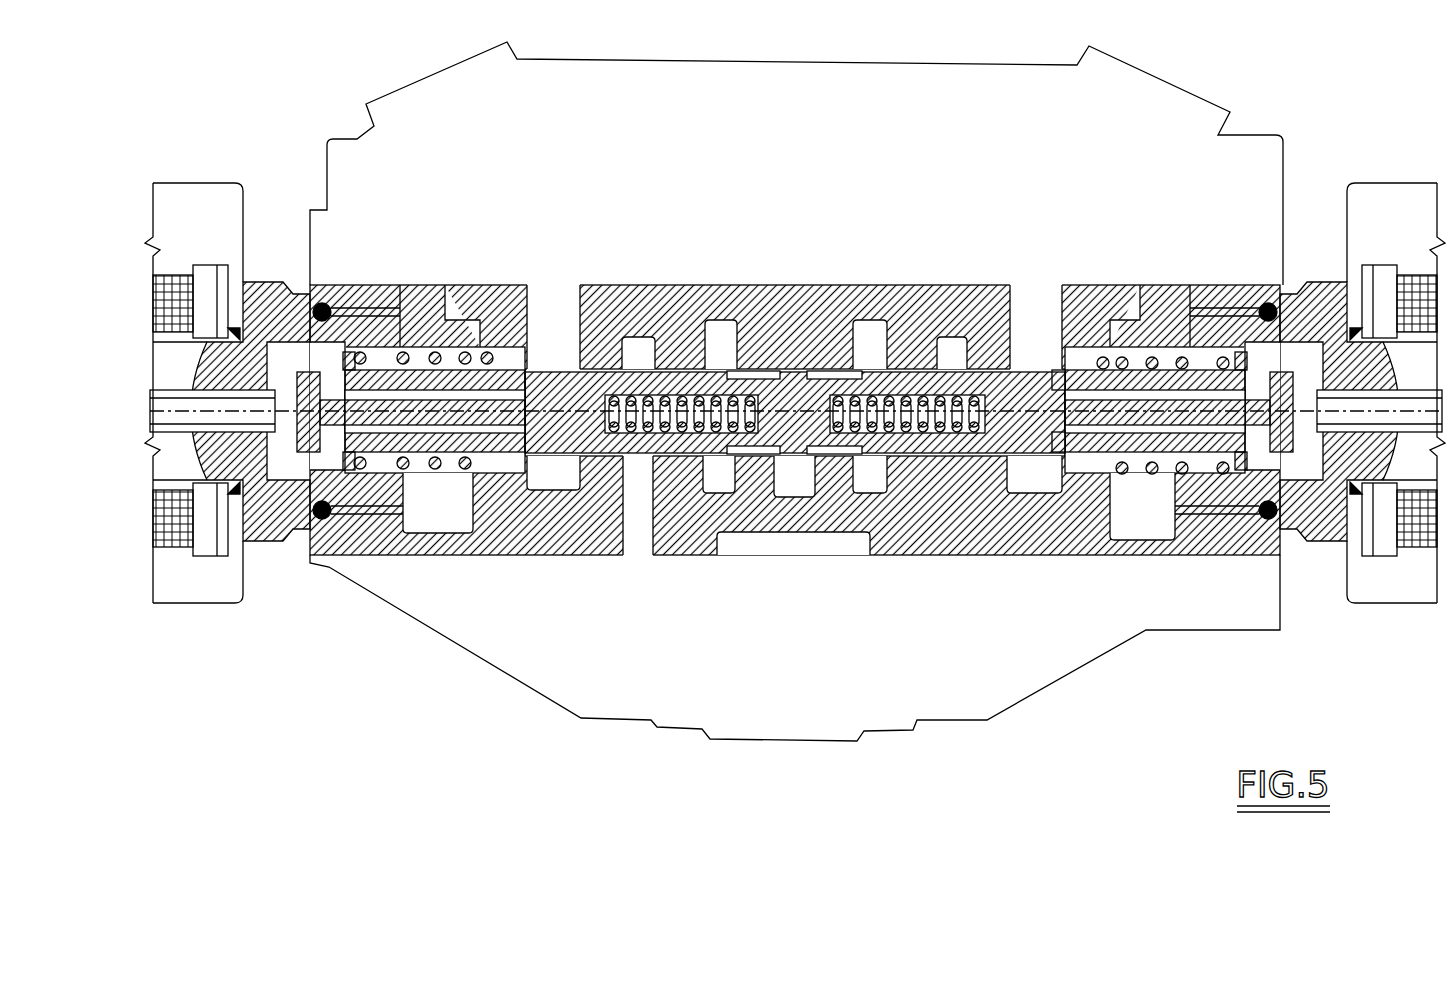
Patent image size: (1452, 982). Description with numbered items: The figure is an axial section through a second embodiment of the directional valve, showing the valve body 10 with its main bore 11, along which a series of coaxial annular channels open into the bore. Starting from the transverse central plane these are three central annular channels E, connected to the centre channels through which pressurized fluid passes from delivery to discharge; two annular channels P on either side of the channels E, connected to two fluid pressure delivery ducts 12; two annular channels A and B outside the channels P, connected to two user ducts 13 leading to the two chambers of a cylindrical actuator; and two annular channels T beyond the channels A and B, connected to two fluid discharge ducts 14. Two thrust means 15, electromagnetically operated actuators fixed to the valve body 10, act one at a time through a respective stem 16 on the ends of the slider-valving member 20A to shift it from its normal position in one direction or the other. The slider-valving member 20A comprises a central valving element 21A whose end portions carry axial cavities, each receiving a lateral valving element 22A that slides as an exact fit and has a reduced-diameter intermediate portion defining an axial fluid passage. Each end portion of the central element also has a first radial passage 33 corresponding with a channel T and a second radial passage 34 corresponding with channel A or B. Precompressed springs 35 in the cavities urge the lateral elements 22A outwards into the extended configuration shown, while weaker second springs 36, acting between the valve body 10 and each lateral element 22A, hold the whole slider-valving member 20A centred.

The valve body 10 is at (534, 704).
The main bore 11 is at (718, 460).
The fluid pressure delivery duct 12 is at (638, 550).
The user duct 13 is at (571, 287).
The fluid discharge duct 14 is at (432, 300).
The thrust means 15 is at (217, 267).
The stem 16 is at (250, 417).
The slider-valving member 20A is at (797, 472).
The central valving element 21A is at (698, 350).
The lateral valving element 22A is at (500, 400).
The first radial passage 33 is at (1152, 525).
The second radial passage 34 is at (1057, 377).
The precompressed spring 35 is at (657, 473).
The second precompressed spring 36 is at (1172, 357).
The annular channel A is at (563, 482).
The annular channel B is at (1043, 483).
The annular channel P is at (637, 347).
The annular channel T is at (437, 520).
The central annular channel E is at (720, 325).